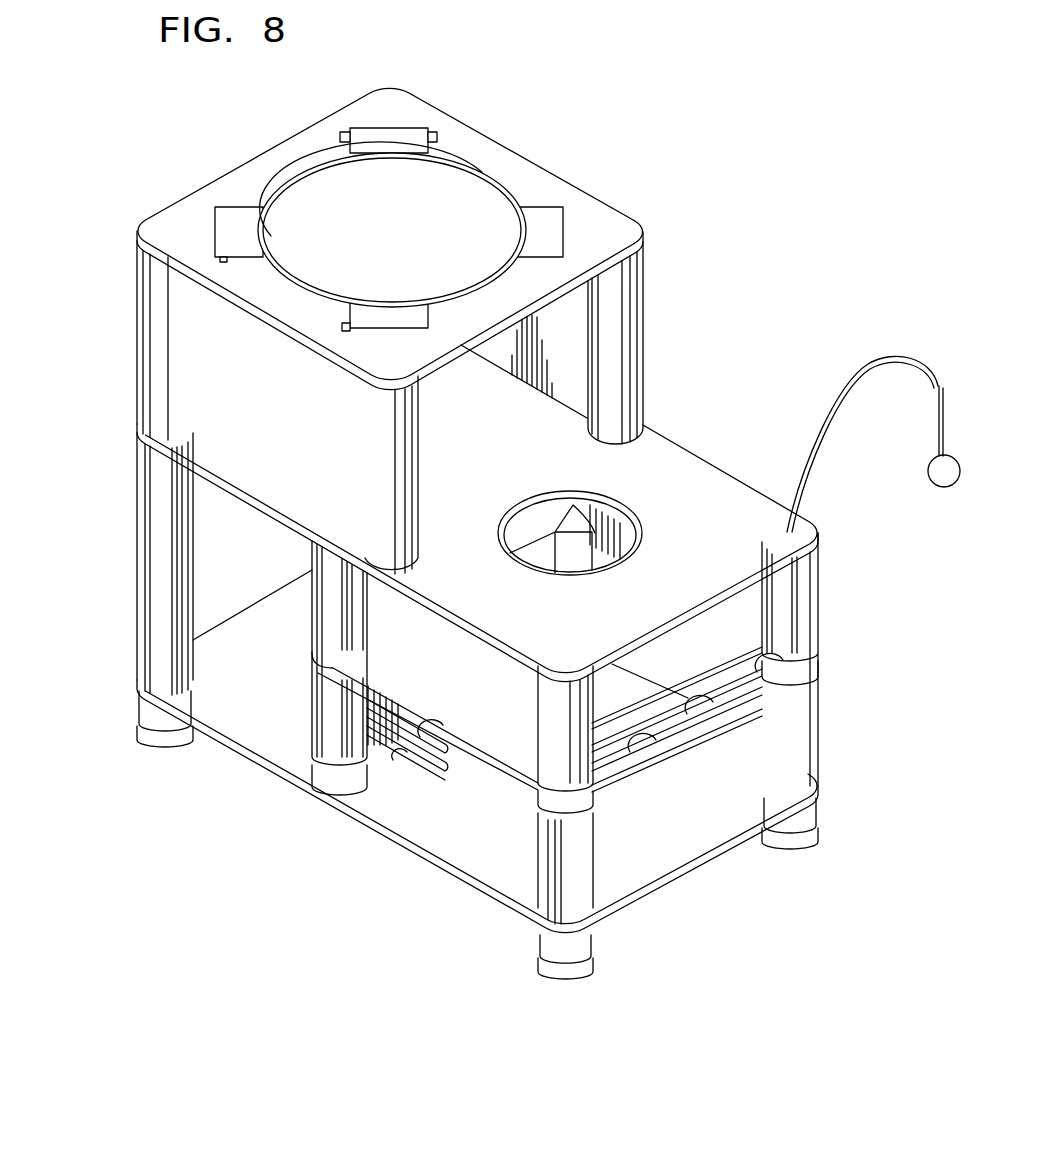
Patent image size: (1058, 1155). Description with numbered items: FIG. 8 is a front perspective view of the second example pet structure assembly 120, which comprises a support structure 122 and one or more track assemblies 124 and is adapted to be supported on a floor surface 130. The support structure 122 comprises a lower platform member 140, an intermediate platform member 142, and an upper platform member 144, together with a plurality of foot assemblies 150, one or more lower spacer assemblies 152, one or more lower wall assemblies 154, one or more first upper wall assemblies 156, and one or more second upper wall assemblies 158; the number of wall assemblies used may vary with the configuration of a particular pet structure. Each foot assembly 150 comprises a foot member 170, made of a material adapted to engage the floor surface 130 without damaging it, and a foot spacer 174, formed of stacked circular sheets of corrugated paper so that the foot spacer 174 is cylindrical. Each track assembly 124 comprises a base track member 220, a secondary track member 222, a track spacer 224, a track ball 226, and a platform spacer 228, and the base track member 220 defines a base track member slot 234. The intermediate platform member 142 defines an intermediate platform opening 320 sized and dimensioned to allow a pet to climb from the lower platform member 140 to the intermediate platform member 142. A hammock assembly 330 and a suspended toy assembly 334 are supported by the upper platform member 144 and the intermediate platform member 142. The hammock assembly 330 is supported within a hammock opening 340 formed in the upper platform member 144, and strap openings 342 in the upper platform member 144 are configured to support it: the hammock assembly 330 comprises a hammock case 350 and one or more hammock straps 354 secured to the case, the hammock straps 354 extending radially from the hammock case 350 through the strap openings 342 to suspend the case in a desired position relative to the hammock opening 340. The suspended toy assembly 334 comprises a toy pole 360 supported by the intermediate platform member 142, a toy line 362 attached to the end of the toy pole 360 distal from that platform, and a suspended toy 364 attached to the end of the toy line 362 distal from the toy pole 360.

The pet structure assembly 120 is at (401, 314).
The support structure 122 is at (682, 275).
The track assembly 124 is at (607, 745).
The floor surface 130 is at (476, 731).
The lower platform member 140 is at (450, 850).
The intermediate platform member 142 is at (477, 543).
The upper platform member 144 is at (305, 140).
The foot assembly 150 is at (475, 860).
The lower spacer assembly 152 is at (137, 510).
The lower wall assembly 154 is at (567, 728).
The first upper wall assembly 156 is at (137, 314).
The second upper wall assembly 158 is at (648, 340).
The foot member 170 is at (145, 735).
The foot spacer 174 is at (147, 710).
The base track member 220 is at (443, 740).
The secondary track member 222 is at (427, 722).
The track spacer 224 is at (805, 660).
The track ball 226 is at (455, 758).
The platform spacer 228 is at (311, 687).
The base track member slot 234 is at (720, 683).
The intermediate platform opening 320 is at (620, 517).
The hammock assembly 330 is at (263, 157).
The suspended toy assembly 334 is at (873, 408).
The hammock opening 340 is at (507, 178).
The strap opening 342 is at (438, 138).
The hammock case 350 is at (455, 183).
The hammock strap 354 is at (415, 125).
The toy pole 360 is at (815, 443).
The toy line 362 is at (938, 428).
The suspended toy 364 is at (929, 474).